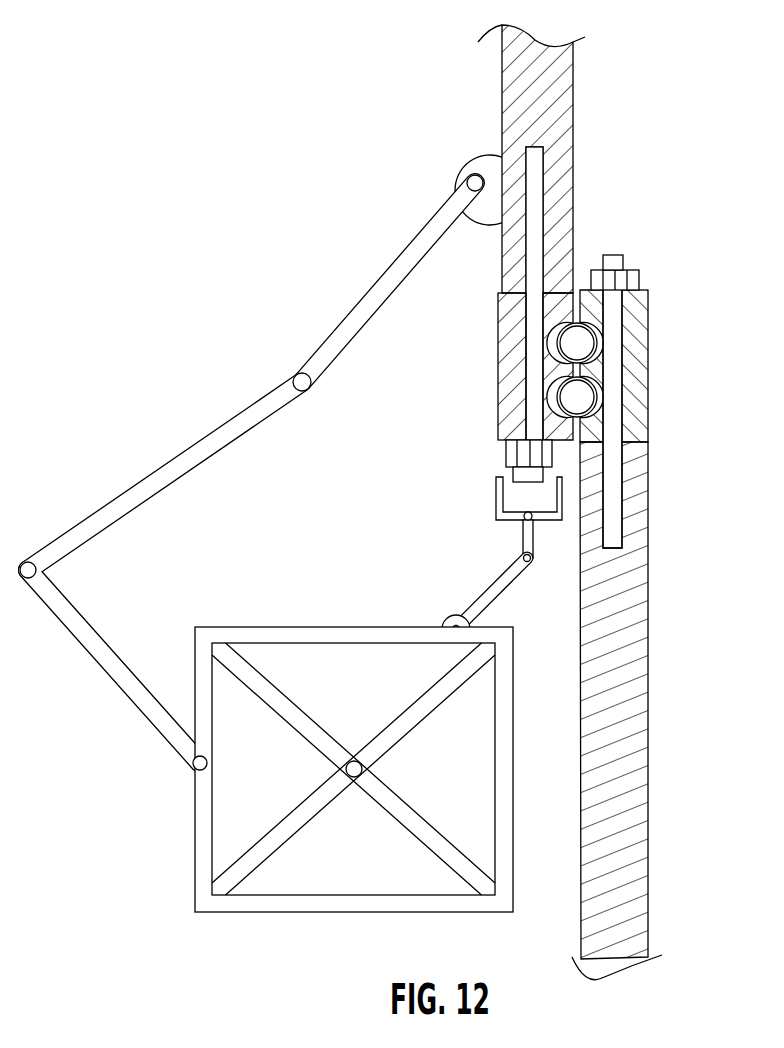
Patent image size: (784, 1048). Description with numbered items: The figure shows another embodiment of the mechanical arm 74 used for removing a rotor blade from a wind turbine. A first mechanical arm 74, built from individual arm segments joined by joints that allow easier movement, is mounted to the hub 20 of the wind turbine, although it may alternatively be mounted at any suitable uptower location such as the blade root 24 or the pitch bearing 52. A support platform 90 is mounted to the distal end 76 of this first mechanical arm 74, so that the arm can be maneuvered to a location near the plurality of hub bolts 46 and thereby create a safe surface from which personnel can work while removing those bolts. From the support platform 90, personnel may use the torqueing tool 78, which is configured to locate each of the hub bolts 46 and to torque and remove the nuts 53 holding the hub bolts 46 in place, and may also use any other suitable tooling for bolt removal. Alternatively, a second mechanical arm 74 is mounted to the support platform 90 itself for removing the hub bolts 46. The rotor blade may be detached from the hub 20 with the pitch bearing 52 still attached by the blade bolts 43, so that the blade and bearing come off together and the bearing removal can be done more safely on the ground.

The hub 20 is at (497, 100).
The blade root 24 is at (651, 702).
The blade bolts 43 is at (615, 475).
The hub bolts 46 is at (535, 292).
The pitch bearing 52 is at (495, 388).
The nuts 53 is at (511, 455).
The mechanical arm 74 is at (240, 410).
The distal end 76 is at (190, 753).
The torqueing tool 78 is at (543, 516).
The support platform 90 is at (168, 850).